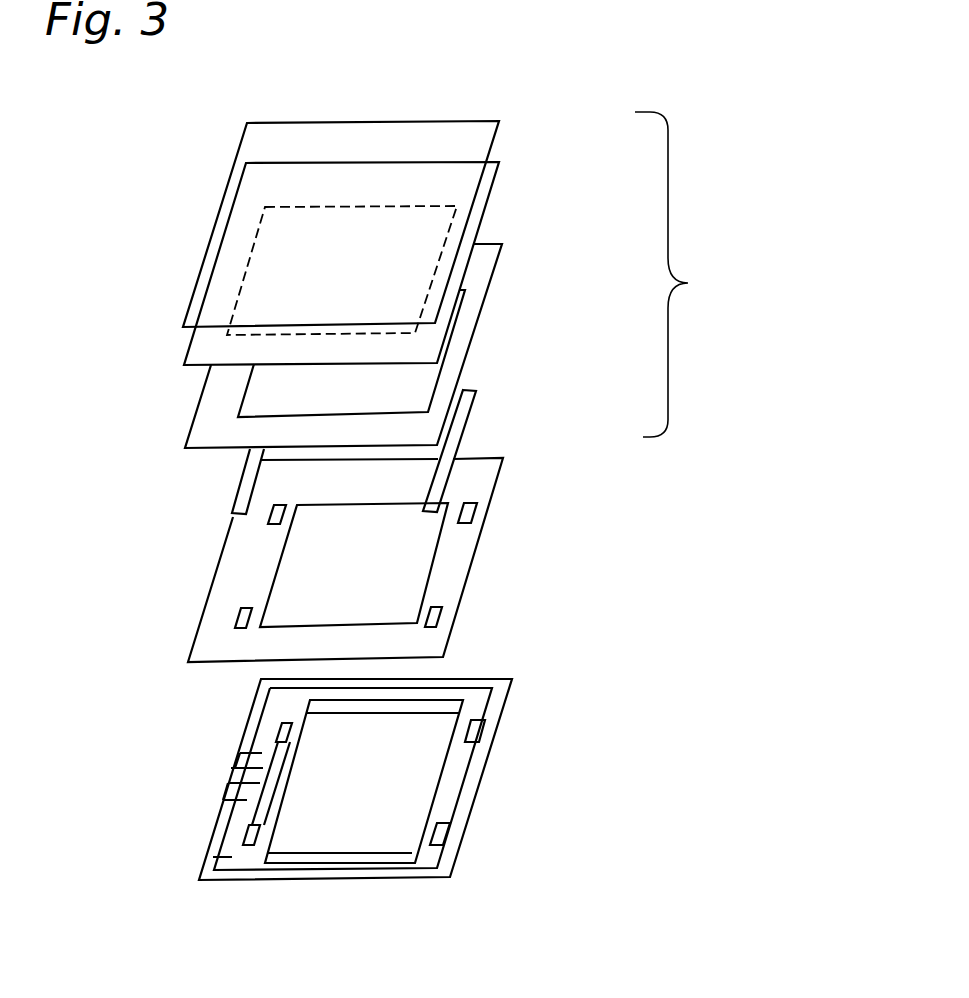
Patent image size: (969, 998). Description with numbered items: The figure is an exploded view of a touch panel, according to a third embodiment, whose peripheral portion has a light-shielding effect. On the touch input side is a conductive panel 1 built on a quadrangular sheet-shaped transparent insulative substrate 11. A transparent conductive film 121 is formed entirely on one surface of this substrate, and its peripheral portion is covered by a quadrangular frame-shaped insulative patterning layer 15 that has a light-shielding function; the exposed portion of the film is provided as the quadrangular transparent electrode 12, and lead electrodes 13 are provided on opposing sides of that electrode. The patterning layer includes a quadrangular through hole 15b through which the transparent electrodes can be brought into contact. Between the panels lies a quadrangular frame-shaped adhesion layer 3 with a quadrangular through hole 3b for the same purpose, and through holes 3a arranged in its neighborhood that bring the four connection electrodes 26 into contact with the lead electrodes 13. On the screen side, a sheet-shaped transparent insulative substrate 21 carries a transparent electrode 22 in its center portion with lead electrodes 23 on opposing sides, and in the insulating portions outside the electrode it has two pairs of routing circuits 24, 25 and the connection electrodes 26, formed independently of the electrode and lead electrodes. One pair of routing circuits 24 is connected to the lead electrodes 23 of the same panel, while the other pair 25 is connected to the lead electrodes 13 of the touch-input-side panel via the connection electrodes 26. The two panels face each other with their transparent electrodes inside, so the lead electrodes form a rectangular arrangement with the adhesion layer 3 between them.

The conductive panel 1 is at (677, 274).
The transparent insulative substrate 11 is at (494, 133).
The transparent electrode 12 is at (480, 224).
The transparent conductive film 121 is at (228, 203).
The insulative patterning layer 15 is at (483, 302).
The through hole 15b is at (412, 388).
The lead electrodes 13 is at (250, 488).
The adhesion layer 3 is at (510, 497).
The through holes 3a is at (268, 520).
The through hole 3b is at (290, 573).
The transparent insulative substrate 21 is at (506, 702).
The transparent electrode 22 is at (325, 835).
The lead electrodes 23 is at (440, 703).
The routing circuits 24 is at (268, 730).
The routing circuits 25 is at (460, 792).
The connection electrodes 26 is at (287, 723).